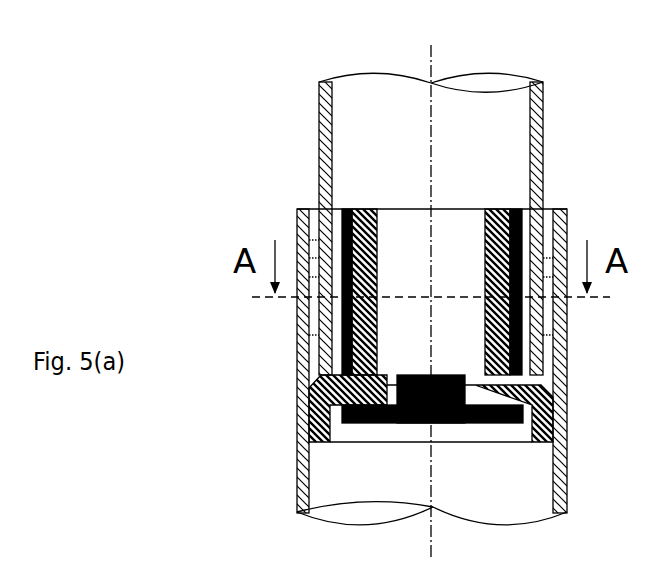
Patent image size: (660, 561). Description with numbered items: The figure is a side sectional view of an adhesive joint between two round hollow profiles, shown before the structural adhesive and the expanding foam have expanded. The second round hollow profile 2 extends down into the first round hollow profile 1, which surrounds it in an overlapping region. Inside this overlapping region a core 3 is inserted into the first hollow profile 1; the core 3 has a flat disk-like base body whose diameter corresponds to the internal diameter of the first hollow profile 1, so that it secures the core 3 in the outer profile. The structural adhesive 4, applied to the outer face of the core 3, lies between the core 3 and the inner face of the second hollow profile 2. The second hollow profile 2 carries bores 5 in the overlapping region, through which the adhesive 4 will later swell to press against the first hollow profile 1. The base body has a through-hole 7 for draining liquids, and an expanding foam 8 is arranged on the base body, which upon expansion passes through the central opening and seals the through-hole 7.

The first round hollow profile 1 is at (565, 363).
The second round hollow profile 2 is at (542, 130).
The core 3 is at (551, 406).
The structural adhesive 4 is at (479, 263).
The bores 5 is at (322, 343).
The through-hole 7 is at (390, 422).
The expanding foam 8 is at (465, 423).